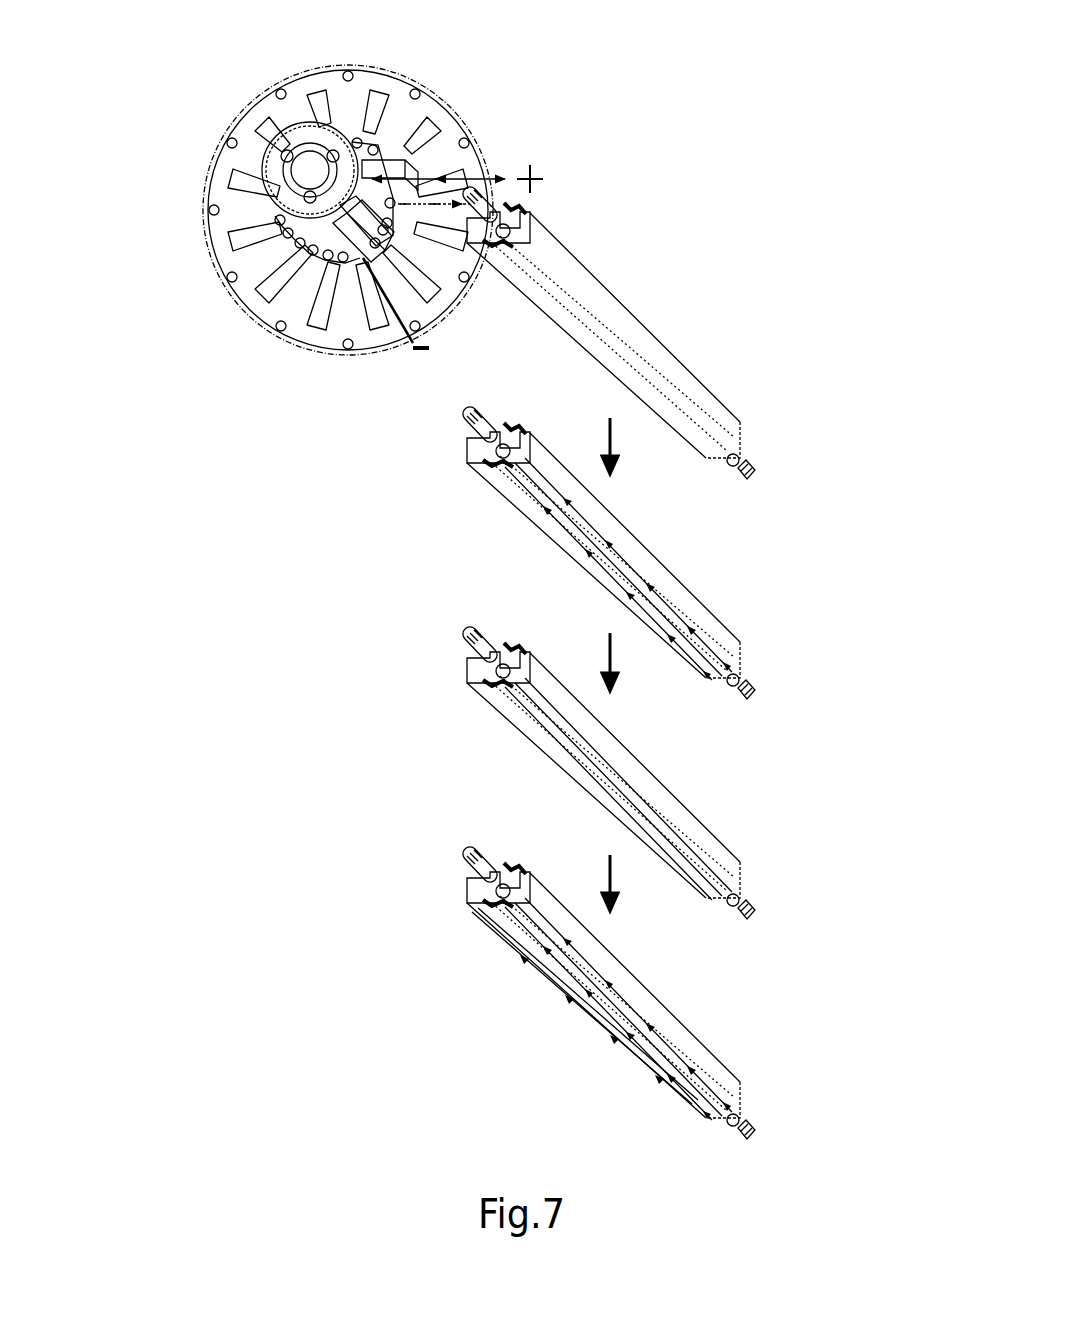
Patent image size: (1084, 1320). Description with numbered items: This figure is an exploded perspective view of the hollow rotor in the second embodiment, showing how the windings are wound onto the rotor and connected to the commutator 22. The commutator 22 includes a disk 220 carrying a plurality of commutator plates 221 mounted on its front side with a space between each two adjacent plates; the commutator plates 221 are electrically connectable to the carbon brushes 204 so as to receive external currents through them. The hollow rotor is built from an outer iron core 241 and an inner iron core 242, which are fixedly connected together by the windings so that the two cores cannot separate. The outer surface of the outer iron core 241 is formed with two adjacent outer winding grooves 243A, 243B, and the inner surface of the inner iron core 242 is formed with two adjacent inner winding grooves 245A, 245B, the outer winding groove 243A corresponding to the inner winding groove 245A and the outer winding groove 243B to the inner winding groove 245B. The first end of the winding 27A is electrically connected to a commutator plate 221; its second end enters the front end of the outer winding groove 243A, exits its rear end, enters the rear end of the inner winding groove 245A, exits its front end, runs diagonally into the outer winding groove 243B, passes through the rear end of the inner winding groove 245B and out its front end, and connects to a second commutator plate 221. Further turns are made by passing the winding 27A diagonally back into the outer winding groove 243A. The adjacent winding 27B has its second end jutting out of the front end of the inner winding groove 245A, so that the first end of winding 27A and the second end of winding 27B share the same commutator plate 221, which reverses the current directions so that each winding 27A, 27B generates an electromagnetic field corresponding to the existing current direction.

The commutator 22 is at (250, 86).
The carbon brushes 204 is at (390, 168).
The disk 220 is at (312, 332).
The commutator plates 221 is at (328, 232).
The outer iron core 241 is at (693, 390).
The inner iron core 242 is at (478, 224).
The outer winding groove 243A is at (535, 236).
The outer winding groove 243B is at (532, 206).
The inner winding groove 245A is at (687, 449).
The inner winding groove 245B is at (463, 432).
The winding 27A is at (710, 430).
The winding 27B is at (623, 1047).